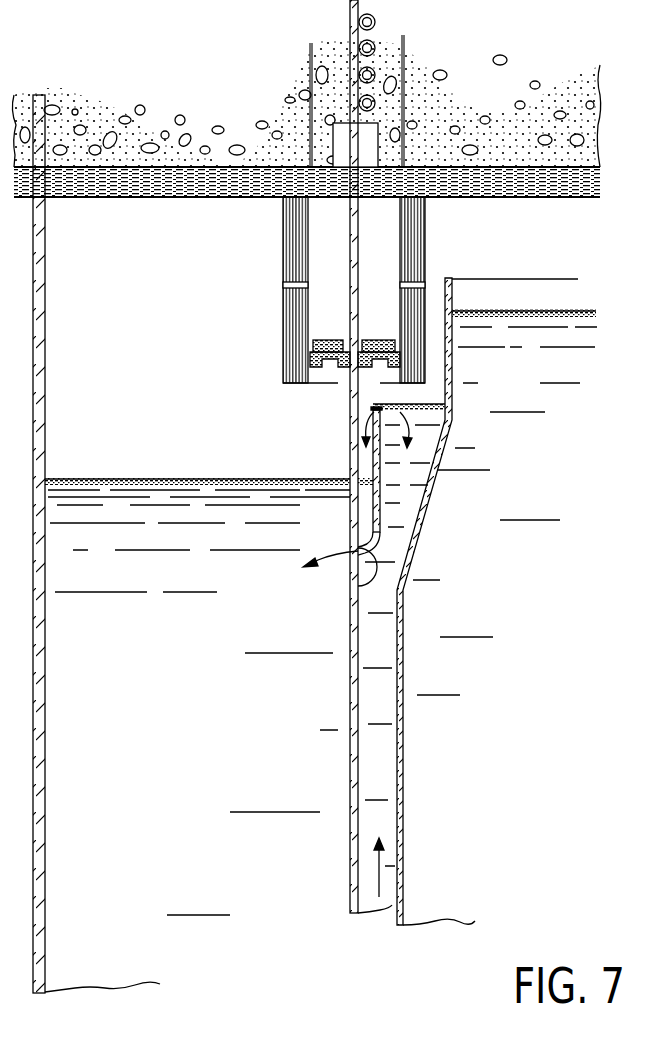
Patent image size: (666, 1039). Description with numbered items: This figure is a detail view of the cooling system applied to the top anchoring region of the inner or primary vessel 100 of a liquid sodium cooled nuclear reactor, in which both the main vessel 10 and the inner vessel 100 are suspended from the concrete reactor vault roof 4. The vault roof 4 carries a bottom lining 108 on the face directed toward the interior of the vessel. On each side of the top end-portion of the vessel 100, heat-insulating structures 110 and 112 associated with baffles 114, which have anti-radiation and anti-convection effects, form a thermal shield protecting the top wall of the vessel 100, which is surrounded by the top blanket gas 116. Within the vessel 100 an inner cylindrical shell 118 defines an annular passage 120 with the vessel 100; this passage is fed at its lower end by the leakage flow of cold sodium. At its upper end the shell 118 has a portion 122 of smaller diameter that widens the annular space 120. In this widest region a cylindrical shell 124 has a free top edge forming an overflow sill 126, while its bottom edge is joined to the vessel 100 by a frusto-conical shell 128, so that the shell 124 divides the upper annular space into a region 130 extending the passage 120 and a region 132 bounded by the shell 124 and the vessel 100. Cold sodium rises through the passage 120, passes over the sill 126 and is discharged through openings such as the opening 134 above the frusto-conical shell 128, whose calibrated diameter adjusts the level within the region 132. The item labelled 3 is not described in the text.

The cable coils 3 is at (376, 19).
The reactor vault roof 4 is at (503, 106).
The main vessel 10 is at (42, 948).
The inner vessel 100 is at (357, 720).
The bottom lining 108 is at (552, 182).
The heat-insulating structure 110 is at (415, 263).
The heat-insulating structure 112 is at (288, 248).
The baffle 114 is at (326, 340).
The top blanket gas 116 is at (114, 416).
The inner cylindrical shell 118 is at (402, 668).
The annular passage 120 is at (375, 783).
The portion of smaller diameter 122 is at (443, 443).
The cylindrical shell 124 is at (380, 503).
The overflow sill 126 is at (371, 403).
The frusto-conical shell 128 is at (355, 589).
The region 130 is at (410, 478).
The region 132 is at (367, 465).
The opening 134 is at (352, 543).